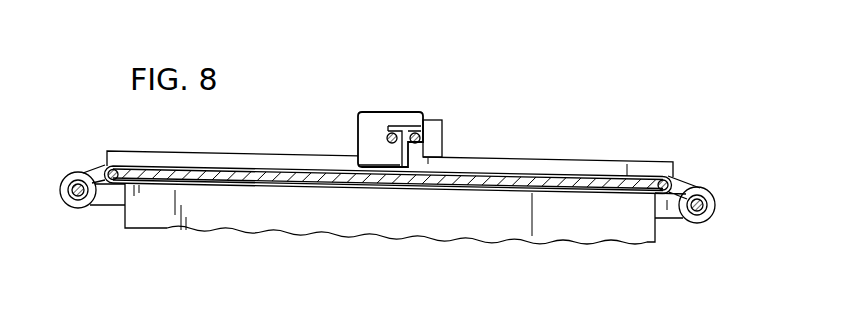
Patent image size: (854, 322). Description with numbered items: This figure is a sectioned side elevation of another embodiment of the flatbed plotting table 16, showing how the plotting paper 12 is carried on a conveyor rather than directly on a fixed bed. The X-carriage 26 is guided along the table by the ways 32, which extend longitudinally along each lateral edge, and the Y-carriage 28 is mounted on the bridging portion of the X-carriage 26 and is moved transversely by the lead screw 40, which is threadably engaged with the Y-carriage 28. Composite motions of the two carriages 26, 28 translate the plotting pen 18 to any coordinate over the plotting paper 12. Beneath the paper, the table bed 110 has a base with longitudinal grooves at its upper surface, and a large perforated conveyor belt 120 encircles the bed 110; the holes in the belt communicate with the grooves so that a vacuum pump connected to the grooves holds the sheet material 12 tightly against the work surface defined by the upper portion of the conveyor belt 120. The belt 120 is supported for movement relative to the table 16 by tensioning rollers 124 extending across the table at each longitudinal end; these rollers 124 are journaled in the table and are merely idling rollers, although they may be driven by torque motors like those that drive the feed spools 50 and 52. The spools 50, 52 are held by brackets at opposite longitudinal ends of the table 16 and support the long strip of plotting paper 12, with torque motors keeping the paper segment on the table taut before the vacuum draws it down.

The plotting paper 12 is at (101, 167).
The flatbed plotting table 16 is at (544, 148).
The plotting pen 18 is at (360, 164).
The X-carriage 26 is at (437, 134).
The Y-carriage 28 is at (378, 115).
The ways 32 is at (253, 156).
The lead screw 40 is at (386, 139).
The feed spool 50 is at (61, 188).
The feed spool 52 is at (714, 206).
The table bed 110 is at (559, 178).
The conveyor belt 120 is at (157, 191).
The tensioning rollers 124 is at (123, 168).